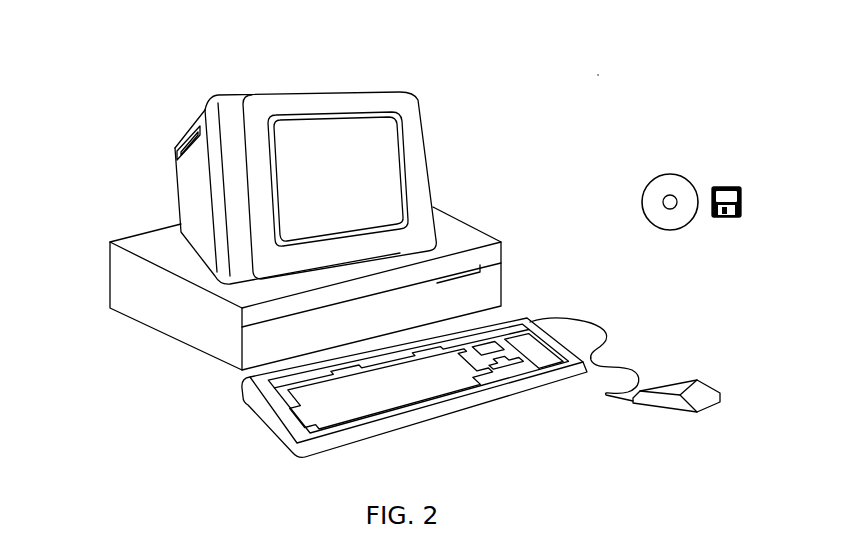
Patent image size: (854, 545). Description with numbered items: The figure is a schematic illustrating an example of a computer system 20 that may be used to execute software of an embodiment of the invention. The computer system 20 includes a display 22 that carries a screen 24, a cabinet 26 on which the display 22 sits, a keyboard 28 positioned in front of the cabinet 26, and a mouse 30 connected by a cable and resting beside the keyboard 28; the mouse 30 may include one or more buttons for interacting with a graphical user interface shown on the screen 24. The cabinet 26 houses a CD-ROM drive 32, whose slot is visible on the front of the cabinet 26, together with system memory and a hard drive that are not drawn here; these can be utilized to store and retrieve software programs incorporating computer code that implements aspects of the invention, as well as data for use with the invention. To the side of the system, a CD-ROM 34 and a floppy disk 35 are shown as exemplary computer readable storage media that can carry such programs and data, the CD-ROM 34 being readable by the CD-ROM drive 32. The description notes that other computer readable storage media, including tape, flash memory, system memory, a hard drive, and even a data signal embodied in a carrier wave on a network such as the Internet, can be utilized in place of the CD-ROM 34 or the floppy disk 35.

The computer system 20 is at (598, 75).
The display 22 is at (431, 181).
The screen 24 is at (402, 135).
The cabinet 26 is at (210, 355).
The keyboard 28 is at (420, 421).
The mouse 30 is at (711, 391).
The CD-ROM drive 32 is at (482, 266).
The CD-ROM 34 is at (670, 174).
The floppy disk 35 is at (724, 188).